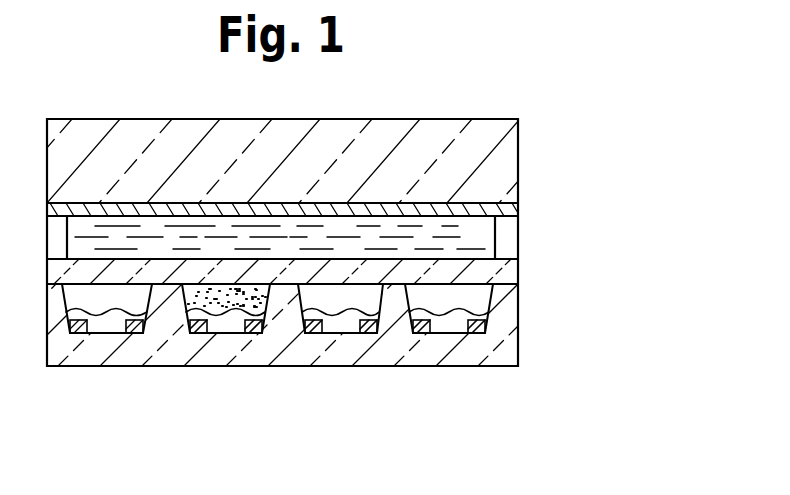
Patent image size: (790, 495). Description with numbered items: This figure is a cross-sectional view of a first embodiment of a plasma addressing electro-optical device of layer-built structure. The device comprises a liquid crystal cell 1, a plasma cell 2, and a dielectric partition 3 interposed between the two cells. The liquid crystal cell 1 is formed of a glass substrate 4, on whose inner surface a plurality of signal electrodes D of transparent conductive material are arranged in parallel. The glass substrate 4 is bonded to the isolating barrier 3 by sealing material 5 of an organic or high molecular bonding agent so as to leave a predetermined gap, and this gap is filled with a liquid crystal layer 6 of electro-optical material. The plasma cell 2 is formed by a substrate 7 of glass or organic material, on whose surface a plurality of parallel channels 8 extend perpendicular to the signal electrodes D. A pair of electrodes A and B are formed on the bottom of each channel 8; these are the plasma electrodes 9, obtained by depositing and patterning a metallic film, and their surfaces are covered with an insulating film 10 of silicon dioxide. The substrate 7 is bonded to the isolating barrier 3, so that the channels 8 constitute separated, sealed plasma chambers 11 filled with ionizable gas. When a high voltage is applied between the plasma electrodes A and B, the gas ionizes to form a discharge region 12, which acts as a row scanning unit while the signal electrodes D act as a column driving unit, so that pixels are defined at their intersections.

The liquid crystal cell 1 is at (41, 122).
The plasma cell 2 is at (41, 268).
The dielectric partition 3 is at (275, 266).
The glass substrate 4 is at (518, 137).
The signal electrodes D is at (518, 203).
The sealing material 5 is at (507, 248).
The liquid crystal layer 6 is at (490, 225).
The substrate 7 is at (507, 345).
The channels 8 is at (488, 300).
The plasma electrodes 9 is at (99, 385).
The plasma electrode A is at (72, 334).
The plasma electrode B is at (130, 334).
The insulating film 10 is at (143, 316).
The plasma chambers 11 is at (452, 307).
The discharge region 12 is at (268, 297).